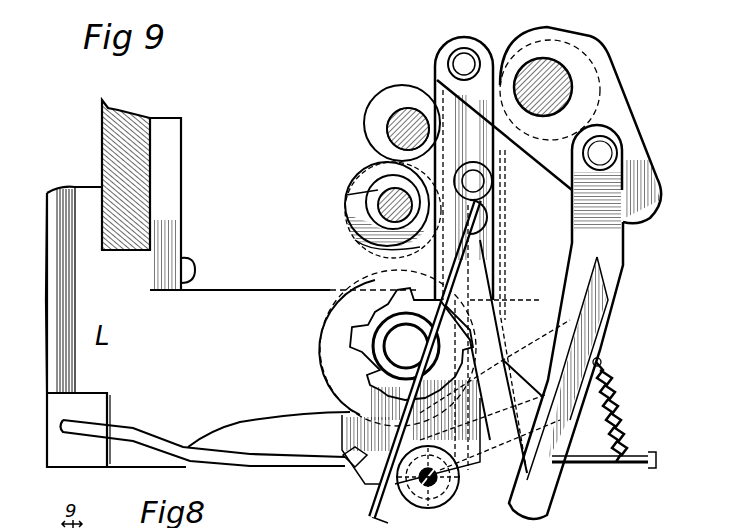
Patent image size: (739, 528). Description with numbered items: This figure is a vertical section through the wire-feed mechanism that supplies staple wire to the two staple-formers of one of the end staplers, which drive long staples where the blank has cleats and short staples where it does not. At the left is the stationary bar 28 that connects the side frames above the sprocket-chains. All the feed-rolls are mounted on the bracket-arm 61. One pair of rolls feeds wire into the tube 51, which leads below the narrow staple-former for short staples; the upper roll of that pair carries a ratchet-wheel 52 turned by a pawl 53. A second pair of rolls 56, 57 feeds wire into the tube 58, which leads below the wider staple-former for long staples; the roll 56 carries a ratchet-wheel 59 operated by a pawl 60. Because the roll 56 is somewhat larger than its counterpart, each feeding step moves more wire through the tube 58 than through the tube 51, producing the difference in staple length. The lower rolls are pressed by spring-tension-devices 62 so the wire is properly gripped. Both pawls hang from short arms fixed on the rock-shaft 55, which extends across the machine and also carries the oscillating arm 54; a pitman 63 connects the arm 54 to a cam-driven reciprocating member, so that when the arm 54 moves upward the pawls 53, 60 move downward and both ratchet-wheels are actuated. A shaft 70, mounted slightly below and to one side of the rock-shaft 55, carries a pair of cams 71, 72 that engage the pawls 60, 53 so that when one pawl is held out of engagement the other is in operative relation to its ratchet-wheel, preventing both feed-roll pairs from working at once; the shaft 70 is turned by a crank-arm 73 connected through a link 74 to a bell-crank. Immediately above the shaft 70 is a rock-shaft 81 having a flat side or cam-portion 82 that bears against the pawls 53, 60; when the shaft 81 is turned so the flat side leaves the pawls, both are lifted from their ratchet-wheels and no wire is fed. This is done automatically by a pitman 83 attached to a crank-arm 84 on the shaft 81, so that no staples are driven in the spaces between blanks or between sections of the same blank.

The stationary bar 28 is at (143, 168).
The tube 51 is at (133, 427).
The ratchet-wheel 52 is at (512, 372).
The pawl 53 is at (503, 275).
The oscillating arm 54 is at (588, 110).
The rock-shaft 55 is at (560, 82).
The feed-roll 56 is at (330, 382).
The feed-roll 57 is at (450, 500).
The tube 58 is at (320, 466).
The ratchet-wheel 59 is at (352, 338).
The pawl 60 is at (503, 240).
The bracket-arm 61 is at (258, 305).
The spring-tension-devices 62 is at (630, 410).
The pitman 63 is at (612, 302).
The shaft 70 is at (378, 185).
The cam 71 is at (346, 195).
The cam 72 is at (358, 243).
The crank-arm 73 is at (440, 262).
The link 74 is at (560, 455).
The rock-shaft 81 is at (395, 112).
The flat side or cam-portion 82 is at (412, 115).
The pitman 83 is at (397, 519).
The crank-arm 84 is at (475, 52).